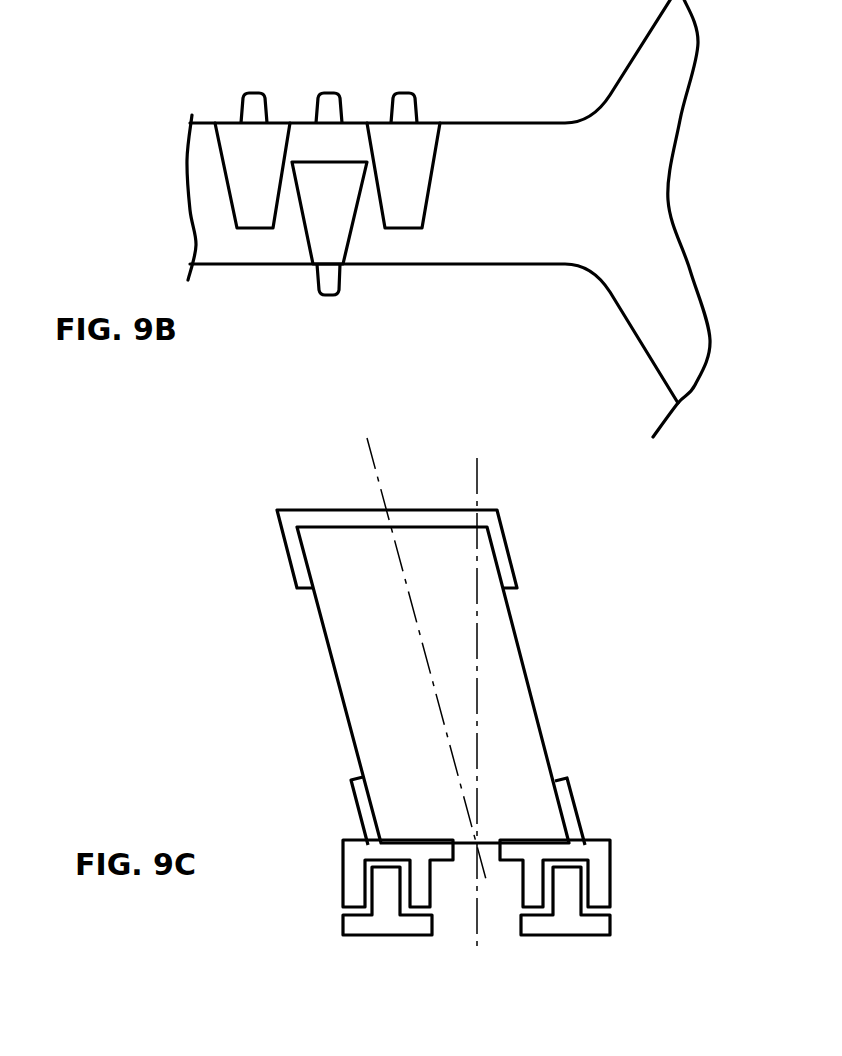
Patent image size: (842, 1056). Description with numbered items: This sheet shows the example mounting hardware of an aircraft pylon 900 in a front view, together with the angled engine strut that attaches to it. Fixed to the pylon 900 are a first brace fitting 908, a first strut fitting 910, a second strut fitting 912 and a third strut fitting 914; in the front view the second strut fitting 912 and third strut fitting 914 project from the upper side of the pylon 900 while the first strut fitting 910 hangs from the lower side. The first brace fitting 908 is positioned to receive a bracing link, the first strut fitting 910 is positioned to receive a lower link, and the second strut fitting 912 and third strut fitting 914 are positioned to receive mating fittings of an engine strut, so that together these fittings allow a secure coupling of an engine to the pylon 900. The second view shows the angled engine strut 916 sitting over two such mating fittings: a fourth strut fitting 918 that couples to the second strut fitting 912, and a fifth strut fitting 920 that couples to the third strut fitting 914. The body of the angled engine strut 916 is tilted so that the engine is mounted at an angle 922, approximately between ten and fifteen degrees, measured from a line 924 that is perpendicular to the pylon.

In FIG. 9B, the pylon 900 is at (491, 245).
In FIG. 9B, the first brace fitting 908 is at (326, 92).
In FIG. 9B, the first strut fitting 910 is at (327, 297).
In FIG. 9B, the second strut fitting 912 is at (399, 92).
In FIG. 9C, the second strut fitting 912 is at (593, 923).
In FIG. 9B, the third strut fitting 914 is at (252, 92).
In FIG. 9C, the third strut fitting 914 is at (358, 923).
In FIG. 9C, the angled engine strut 916 is at (513, 687).
In FIG. 9C, the fourth strut fitting 918 is at (577, 848).
In FIG. 9C, the fifth strut fitting 920 is at (377, 848).
In FIG. 9C, the angle 922 is at (374, 460).
In FIG. 9C, the line perpendicular to a pylon 924 is at (478, 480).